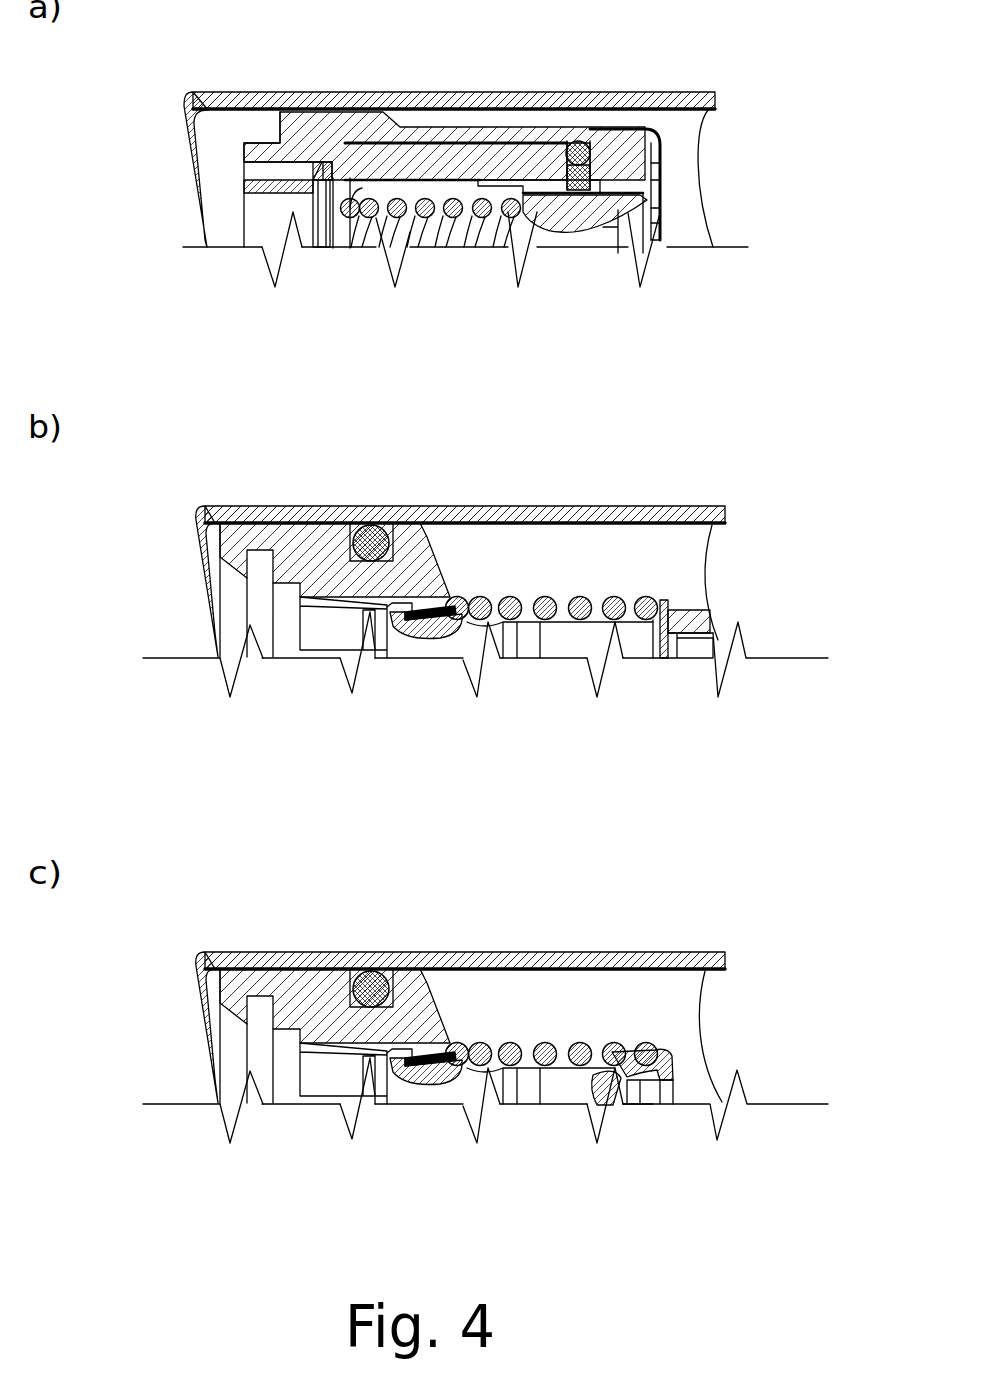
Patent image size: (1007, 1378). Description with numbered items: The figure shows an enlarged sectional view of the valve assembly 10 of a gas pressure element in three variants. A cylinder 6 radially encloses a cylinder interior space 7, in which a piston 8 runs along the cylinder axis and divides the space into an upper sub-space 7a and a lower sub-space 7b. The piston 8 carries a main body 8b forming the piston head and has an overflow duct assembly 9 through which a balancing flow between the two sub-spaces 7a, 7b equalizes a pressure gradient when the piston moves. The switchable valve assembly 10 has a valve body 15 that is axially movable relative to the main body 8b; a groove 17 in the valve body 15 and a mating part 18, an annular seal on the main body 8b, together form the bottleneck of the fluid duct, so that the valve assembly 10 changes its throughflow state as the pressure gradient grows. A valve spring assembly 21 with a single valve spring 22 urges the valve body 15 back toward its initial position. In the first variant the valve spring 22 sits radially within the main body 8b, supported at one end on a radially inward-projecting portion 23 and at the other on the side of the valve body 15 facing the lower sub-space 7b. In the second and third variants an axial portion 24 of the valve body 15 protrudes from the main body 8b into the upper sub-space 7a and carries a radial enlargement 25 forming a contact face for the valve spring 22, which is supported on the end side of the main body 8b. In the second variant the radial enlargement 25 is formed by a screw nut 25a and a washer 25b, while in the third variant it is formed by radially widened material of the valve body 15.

The cylinder 6 is at (258, 102).
The cylinder interior space 7 is at (200, 152).
The upper sub-space 7a is at (672, 128).
The lower sub-space 7b is at (233, 125).
The piston 8 is at (226, 278).
The main body 8b is at (348, 113).
The overflow duct assembly 9 is at (554, 214).
The valve assembly 10 is at (676, 265).
The valve body 15 is at (604, 237).
The groove 17 is at (530, 175).
The mating part 18 is at (597, 172).
The valve spring assembly 21 is at (499, 627).
The valve spring 22 is at (432, 250).
The radially inward-projecting portion 23 is at (366, 250).
The axial portion 24 is at (630, 686).
The radial enlargement 25 is at (741, 728).
The screw nut 25a is at (712, 622).
The washer 25b is at (668, 605).